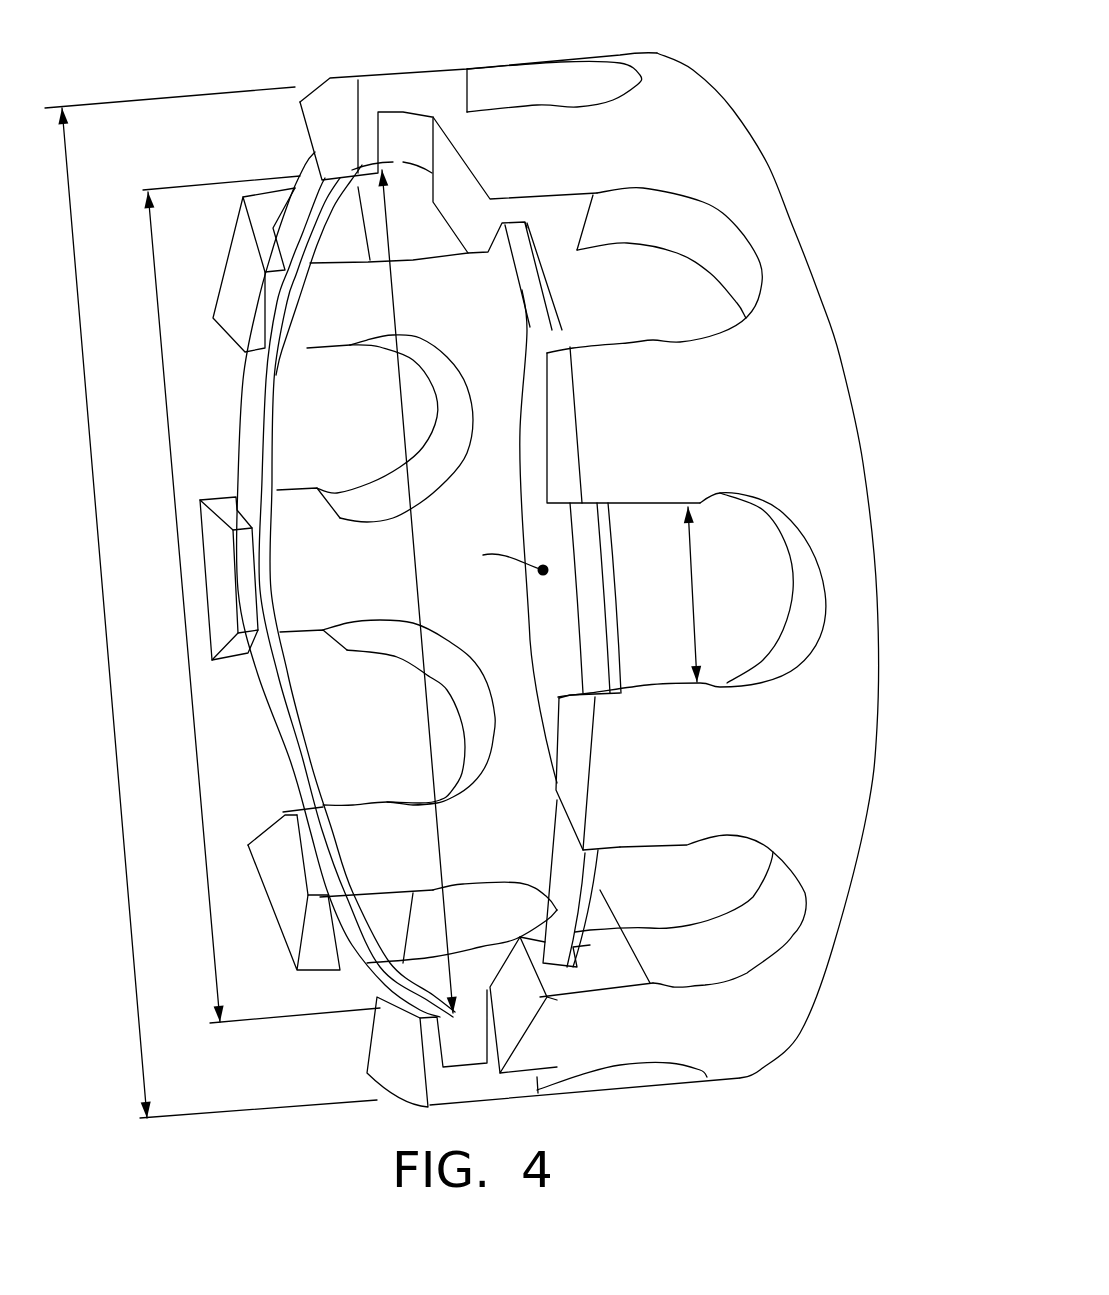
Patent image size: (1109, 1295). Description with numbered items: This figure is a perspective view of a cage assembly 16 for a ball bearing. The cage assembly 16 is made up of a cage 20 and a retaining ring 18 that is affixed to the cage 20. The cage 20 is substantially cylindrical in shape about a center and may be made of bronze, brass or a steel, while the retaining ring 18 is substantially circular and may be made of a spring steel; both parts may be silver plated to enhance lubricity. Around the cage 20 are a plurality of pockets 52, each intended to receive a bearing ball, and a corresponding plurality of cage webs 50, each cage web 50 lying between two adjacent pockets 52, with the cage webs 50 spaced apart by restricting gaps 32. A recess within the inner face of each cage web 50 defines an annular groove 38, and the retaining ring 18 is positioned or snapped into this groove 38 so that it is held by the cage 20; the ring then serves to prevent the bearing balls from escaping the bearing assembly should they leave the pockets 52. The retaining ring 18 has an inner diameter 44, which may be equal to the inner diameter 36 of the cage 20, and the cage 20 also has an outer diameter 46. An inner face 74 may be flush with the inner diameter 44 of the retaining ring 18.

The cage assembly 16 is at (723, 53).
The retaining ring 18 is at (273, 752).
The cage 20 is at (840, 778).
The restricting gaps 32 is at (693, 570).
The inner diameter of the cage 36 is at (208, 897).
The groove 38 is at (543, 950).
The inner diameter of the retaining ring 44 is at (427, 725).
The outer diameter 46 is at (137, 1007).
The cage webs 50 is at (546, 167).
The pockets 52 is at (730, 250).
The inner face 74 is at (260, 348).